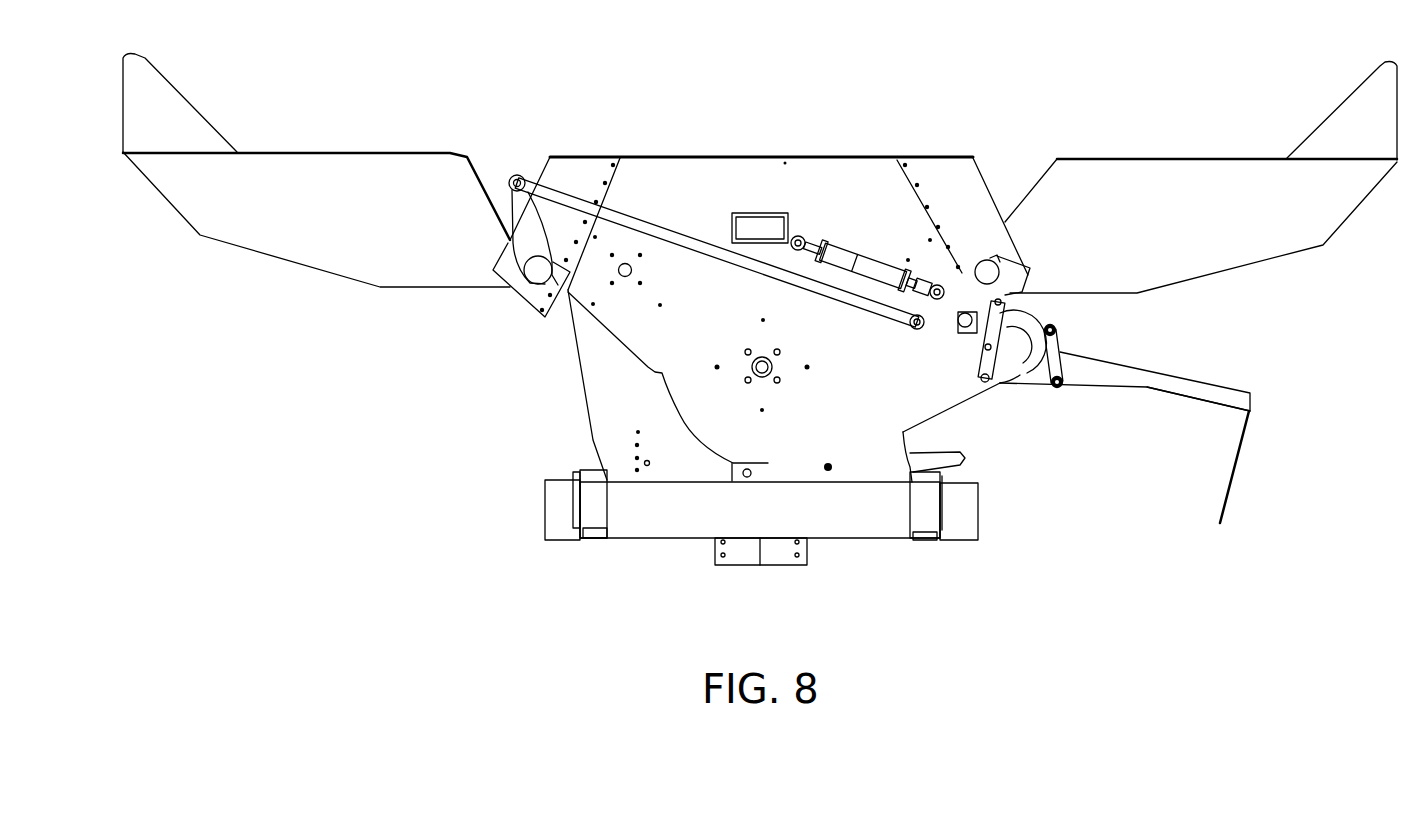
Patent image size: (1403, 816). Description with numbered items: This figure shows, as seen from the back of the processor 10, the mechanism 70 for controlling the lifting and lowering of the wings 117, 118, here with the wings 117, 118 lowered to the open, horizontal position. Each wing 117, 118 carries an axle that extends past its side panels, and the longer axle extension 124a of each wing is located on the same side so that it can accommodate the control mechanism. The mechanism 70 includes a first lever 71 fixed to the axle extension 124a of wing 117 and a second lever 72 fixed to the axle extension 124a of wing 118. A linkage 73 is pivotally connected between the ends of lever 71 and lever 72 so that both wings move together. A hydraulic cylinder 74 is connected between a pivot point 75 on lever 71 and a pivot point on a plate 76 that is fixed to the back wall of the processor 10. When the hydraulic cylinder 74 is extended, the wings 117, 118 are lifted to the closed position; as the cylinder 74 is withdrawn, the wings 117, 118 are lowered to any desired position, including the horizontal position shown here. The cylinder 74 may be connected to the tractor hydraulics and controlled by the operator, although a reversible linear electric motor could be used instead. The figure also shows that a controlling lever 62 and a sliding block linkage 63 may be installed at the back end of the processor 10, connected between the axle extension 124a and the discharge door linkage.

The processor 10 is at (908, 82).
The controlling lever 62 is at (1018, 287).
The sliding block linkage 63 is at (1007, 330).
The mechanism 70 is at (767, 310).
The first lever 71 is at (940, 322).
The second lever 72 is at (523, 243).
The linkage 73 is at (830, 297).
The hydraulic cylinder 74 is at (865, 258).
The pivot point 75 is at (937, 282).
The plate 76 is at (795, 228).
The wing 117 is at (1185, 177).
The wing 118 is at (320, 167).
The axle extension 124a is at (520, 295).